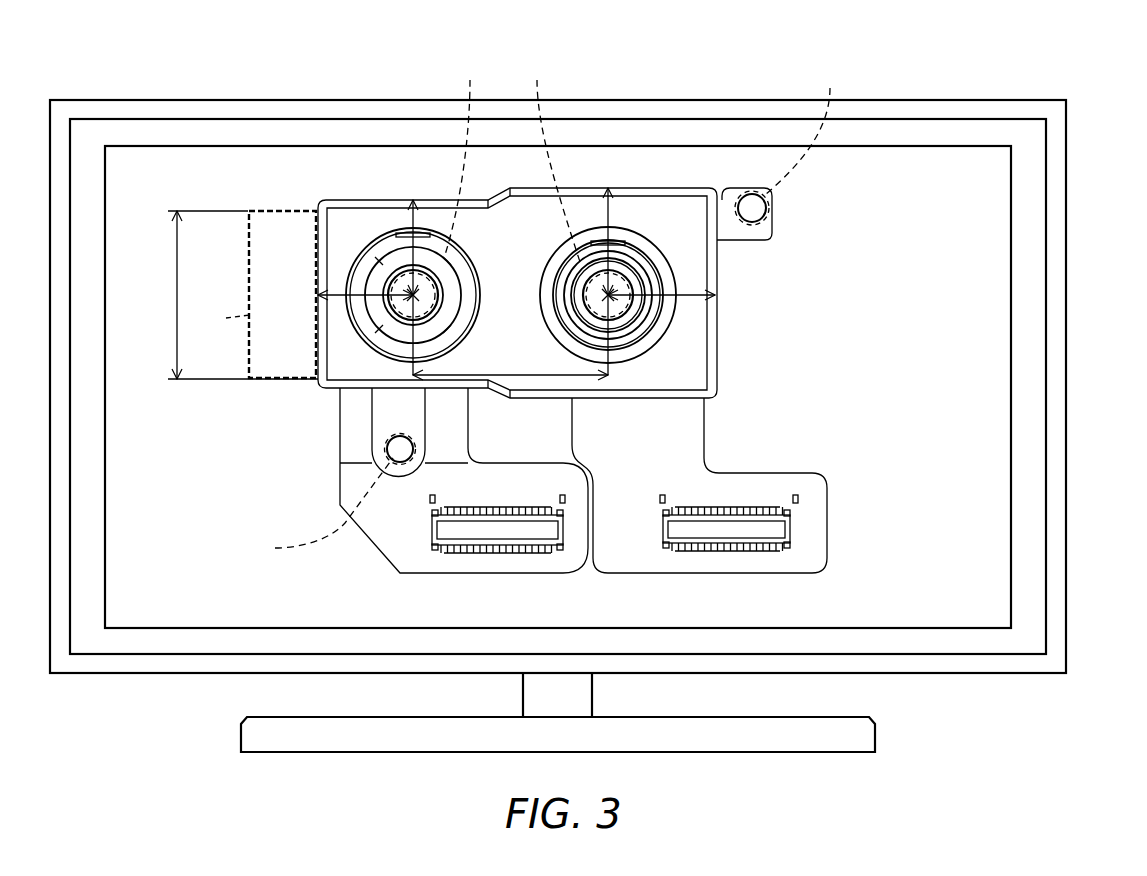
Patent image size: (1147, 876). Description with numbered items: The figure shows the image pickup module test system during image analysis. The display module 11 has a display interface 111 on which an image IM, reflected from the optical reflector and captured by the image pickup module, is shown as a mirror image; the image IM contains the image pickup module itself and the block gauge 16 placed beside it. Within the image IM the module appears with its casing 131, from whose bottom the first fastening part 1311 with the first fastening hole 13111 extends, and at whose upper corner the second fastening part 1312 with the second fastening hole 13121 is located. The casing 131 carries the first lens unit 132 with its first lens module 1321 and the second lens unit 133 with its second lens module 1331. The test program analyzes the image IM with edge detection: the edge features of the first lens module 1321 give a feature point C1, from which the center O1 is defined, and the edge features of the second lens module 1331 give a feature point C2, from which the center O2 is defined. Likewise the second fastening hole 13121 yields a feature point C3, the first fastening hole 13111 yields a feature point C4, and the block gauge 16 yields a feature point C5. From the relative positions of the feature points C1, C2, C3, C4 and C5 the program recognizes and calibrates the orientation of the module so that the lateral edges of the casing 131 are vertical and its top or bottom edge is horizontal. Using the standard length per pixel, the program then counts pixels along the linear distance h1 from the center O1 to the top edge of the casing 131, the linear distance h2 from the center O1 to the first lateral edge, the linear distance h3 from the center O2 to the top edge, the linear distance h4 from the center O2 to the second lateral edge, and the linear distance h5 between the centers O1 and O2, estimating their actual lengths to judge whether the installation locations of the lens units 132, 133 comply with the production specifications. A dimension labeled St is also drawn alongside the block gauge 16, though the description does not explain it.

The display module 11 is at (996, 100).
The display interface 111 is at (1047, 290).
The image IM is at (173, 145).
The block gauge 16 is at (288, 230).
The casing 131 is at (717, 316).
The first fastening part 1311 is at (372, 428).
The first fastening hole 13111 is at (400, 450).
The second fastening part 1312 is at (745, 188).
The second fastening hole 13121 is at (757, 208).
The first lens unit 132 is at (360, 248).
The first lens module 1321 is at (398, 258).
The second lens unit 133 is at (594, 226).
The second lens module 1331 is at (625, 270).
The center of the first lens module O1 is at (405, 303).
The center of the second lens module O2 is at (612, 300).
The feature point C1 is at (468, 152).
The feature point C2 is at (552, 156).
The feature point C3 is at (810, 126).
The feature point C4 is at (318, 511).
The feature point C5 is at (221, 319).
The height of sensing module St is at (231, 295).
The linear distance h1 is at (396, 287).
The linear distance h2 is at (365, 281).
The linear distance h3 is at (625, 281).
The linear distance h4 is at (661, 281).
The linear distance h5 is at (510, 361).